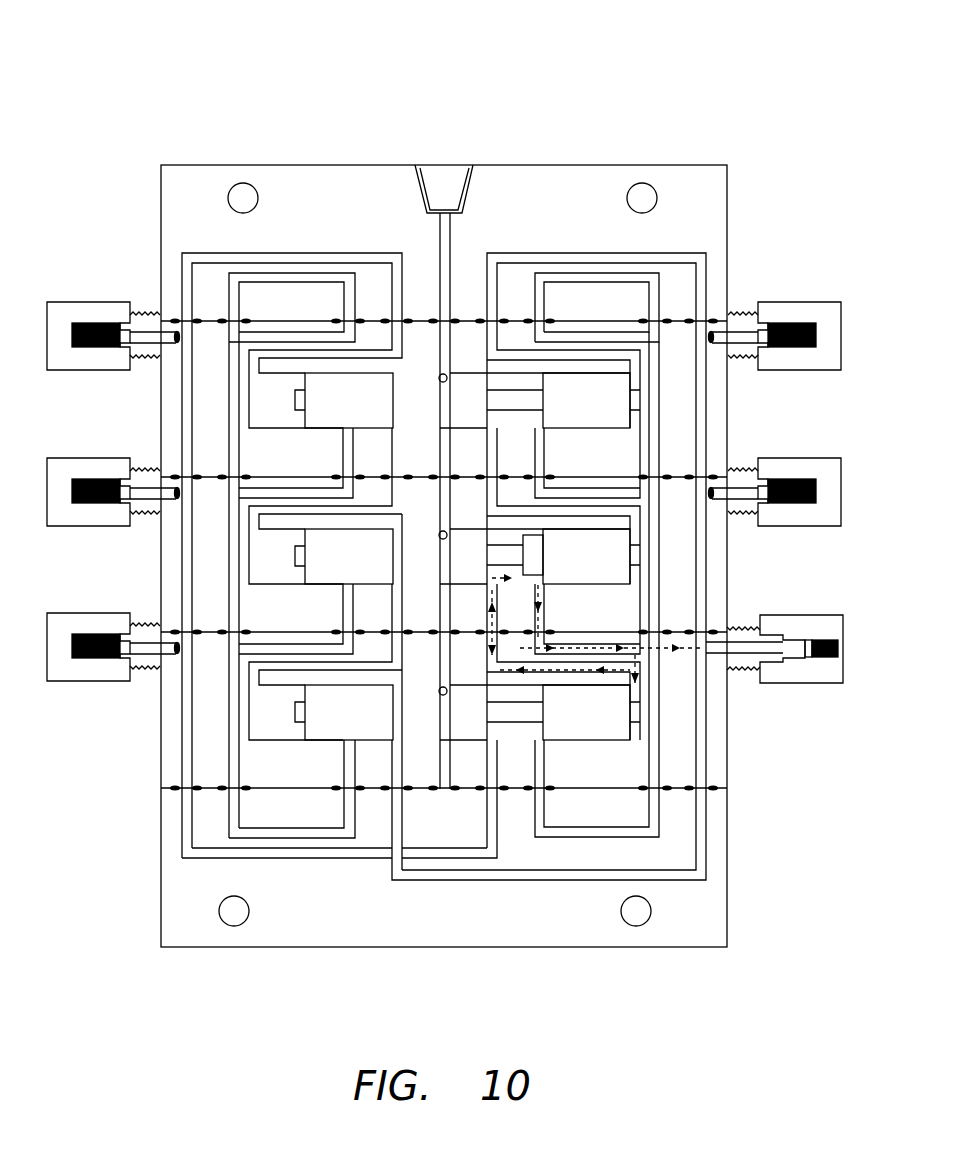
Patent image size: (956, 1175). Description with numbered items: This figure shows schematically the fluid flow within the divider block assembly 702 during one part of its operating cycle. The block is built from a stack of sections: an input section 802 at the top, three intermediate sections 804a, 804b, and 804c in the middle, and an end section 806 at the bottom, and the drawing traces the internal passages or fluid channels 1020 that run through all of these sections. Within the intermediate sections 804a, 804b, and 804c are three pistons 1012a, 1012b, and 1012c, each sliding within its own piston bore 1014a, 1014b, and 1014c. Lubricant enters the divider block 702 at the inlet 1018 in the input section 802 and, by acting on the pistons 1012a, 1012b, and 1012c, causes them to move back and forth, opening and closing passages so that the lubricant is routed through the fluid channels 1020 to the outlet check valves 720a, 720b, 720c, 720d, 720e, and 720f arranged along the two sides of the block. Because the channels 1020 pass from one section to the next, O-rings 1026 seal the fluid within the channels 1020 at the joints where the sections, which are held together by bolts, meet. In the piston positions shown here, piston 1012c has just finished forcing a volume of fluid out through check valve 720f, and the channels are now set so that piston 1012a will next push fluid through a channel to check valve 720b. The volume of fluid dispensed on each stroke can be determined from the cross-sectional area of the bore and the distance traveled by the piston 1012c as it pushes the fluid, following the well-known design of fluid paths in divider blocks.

The divider block assembly 702 is at (135, 44).
The inlet 1018 is at (443, 163).
The input section 802 is at (632, 166).
The end section 806 is at (727, 915).
The internal passages 1020 is at (198, 252).
The O-rings 1026 is at (220, 318).
The intermediate section 804a is at (727, 404).
The intermediate section 804b is at (727, 560).
The intermediate section 804c is at (727, 730).
The piston bore 1014a is at (265, 400).
The piston bore 1014b is at (265, 555).
The piston bore 1014c is at (265, 710).
The piston 1012a is at (590, 432).
The piston 1012b is at (590, 587).
The piston 1012c is at (590, 742).
The outlet check valve 720a is at (62, 300).
The outlet check valve 720b is at (815, 300).
The outlet check valve 720c is at (62, 456).
The outlet check valve 720d is at (815, 456).
The outlet check valve 720e is at (62, 611).
The outlet check valve 720f is at (815, 613).